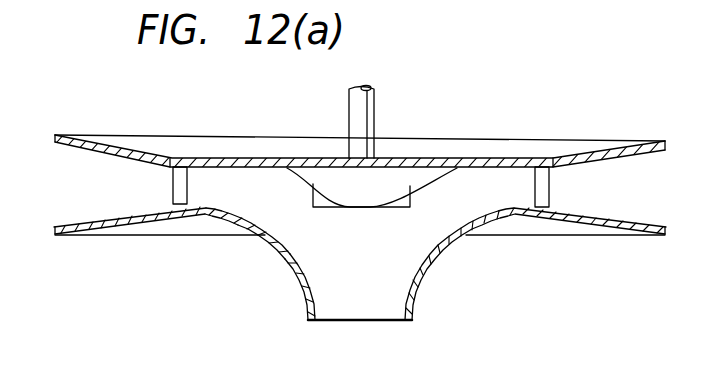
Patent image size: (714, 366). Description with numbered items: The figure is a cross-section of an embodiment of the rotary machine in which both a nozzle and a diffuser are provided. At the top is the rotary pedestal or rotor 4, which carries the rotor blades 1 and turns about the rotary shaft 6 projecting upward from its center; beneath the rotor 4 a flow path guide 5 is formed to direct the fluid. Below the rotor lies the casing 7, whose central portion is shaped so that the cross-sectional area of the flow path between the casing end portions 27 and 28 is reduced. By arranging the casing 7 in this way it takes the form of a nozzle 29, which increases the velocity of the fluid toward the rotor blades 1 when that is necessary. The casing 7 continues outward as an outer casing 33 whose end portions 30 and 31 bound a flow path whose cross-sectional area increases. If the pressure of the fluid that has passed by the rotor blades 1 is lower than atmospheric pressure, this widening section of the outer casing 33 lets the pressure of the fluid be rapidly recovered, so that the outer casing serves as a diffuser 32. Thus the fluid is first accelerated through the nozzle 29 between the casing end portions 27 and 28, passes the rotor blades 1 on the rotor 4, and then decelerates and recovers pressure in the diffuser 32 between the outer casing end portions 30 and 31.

The rotor blade 1 is at (186, 184).
The rotary pedestal 4 is at (478, 162).
The flow path guide 5 is at (397, 171).
The rotary shaft 6 is at (367, 102).
The casing 7 is at (265, 237).
The casing end portion 27 is at (306, 314).
The casing end portion 28 is at (204, 216).
The nozzle 29 is at (297, 272).
The outer casing end portion 30 is at (171, 216).
The outer casing end portion 31 is at (54, 235).
The diffuser 32 is at (115, 236).
The outer casing 33 is at (597, 219).